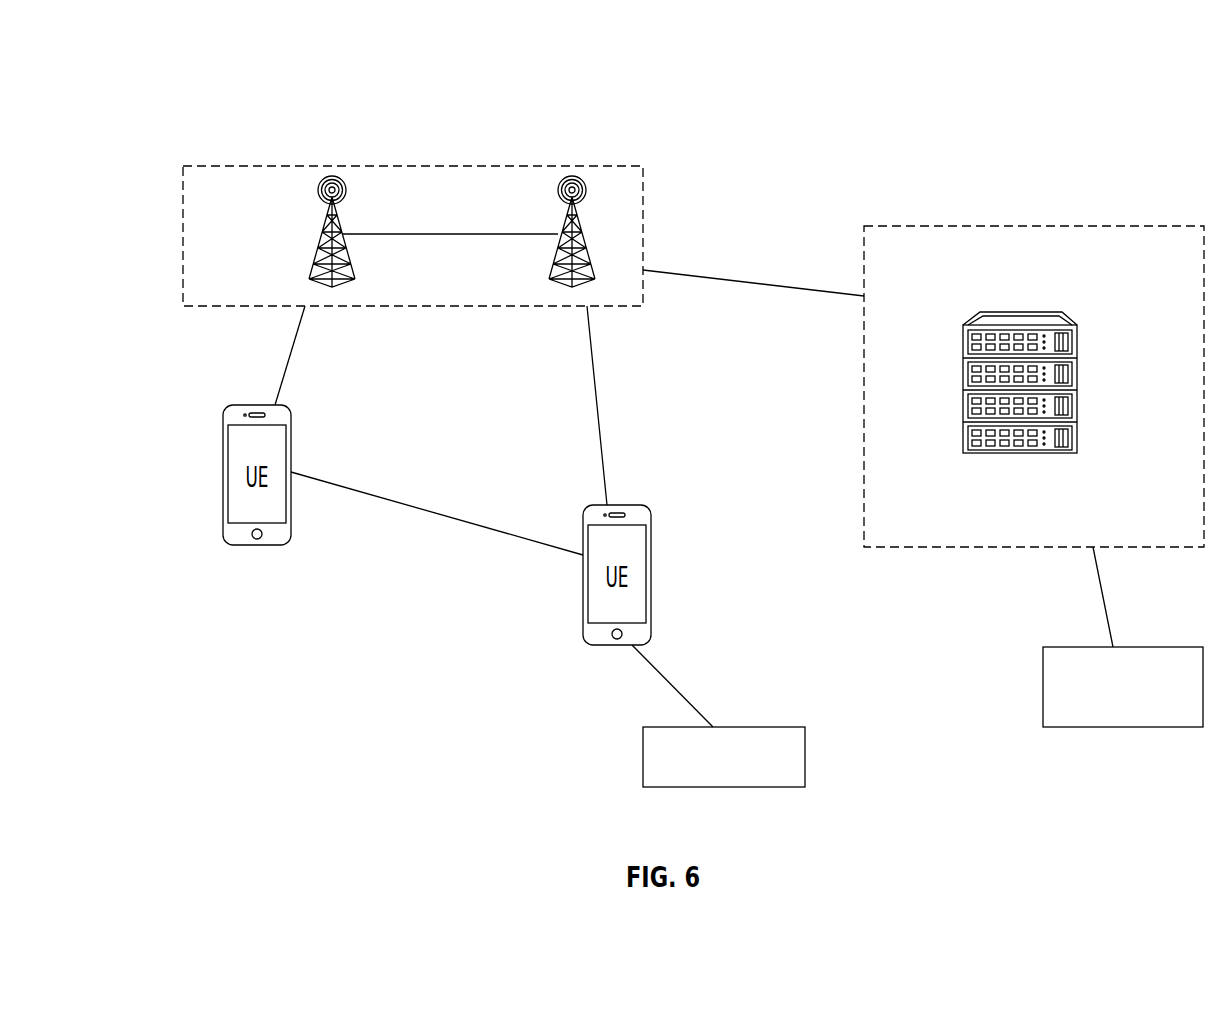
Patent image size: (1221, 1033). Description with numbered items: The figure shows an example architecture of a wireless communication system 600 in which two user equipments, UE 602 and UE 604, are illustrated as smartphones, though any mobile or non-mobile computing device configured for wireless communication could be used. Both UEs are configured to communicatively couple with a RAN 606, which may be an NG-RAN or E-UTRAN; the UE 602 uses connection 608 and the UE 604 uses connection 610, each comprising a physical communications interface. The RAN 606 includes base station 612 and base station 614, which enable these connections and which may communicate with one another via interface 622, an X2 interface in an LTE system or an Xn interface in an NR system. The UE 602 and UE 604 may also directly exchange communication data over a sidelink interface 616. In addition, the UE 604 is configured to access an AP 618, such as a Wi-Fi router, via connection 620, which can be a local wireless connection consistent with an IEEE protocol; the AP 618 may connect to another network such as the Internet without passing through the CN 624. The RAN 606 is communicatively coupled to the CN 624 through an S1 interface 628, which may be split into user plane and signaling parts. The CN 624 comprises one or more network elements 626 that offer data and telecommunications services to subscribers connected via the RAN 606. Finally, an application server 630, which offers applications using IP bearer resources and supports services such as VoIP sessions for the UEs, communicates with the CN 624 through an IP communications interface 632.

The wireless communication system 600 is at (1119, 87).
The UE 602 is at (223, 438).
The UE 604 is at (652, 532).
The RAN 606 is at (415, 166).
The connection 608 is at (296, 345).
The connection 610 is at (592, 390).
The base station 612 is at (330, 208).
The base station 614 is at (569, 208).
The sidelink interface 616 is at (428, 510).
The AP 618 is at (643, 770).
The connection 620 is at (660, 675).
The interface 622 is at (405, 236).
The CN 624 is at (1037, 226).
The network elements 626 is at (1078, 343).
The S1 interface 628 is at (726, 280).
The application server 630 is at (1043, 660).
The IP communications interface 632 is at (1110, 610).